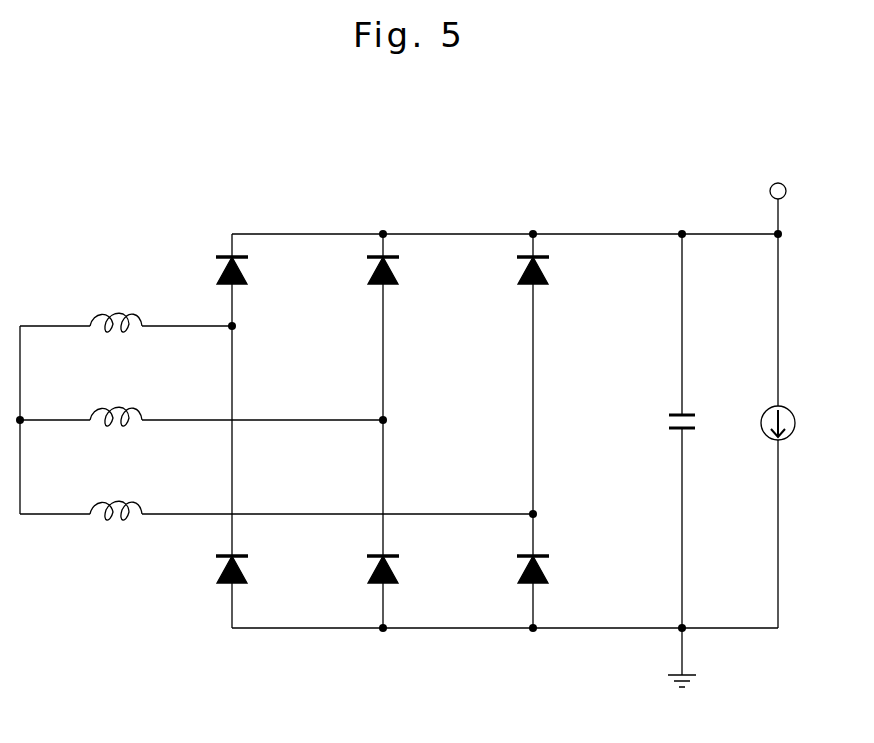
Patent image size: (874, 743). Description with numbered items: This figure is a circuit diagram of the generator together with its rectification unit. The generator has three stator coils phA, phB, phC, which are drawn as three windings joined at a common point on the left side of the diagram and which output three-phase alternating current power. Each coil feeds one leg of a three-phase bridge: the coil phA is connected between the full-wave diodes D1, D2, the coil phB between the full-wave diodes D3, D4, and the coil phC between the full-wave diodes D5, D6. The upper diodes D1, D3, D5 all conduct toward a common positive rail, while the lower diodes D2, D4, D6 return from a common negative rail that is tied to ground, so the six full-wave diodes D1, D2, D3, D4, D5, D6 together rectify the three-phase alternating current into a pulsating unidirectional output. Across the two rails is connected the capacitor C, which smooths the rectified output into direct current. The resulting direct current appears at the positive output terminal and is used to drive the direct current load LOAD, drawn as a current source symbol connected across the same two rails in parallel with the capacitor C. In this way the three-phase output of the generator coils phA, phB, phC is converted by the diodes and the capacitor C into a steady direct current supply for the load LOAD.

The full-wave diode D1 is at (247, 273).
The full-wave diode D2 is at (247, 572).
The full-wave diode D3 is at (399, 273).
The full-wave diode D4 is at (399, 572).
The full-wave diode D5 is at (549, 273).
The full-wave diode D6 is at (549, 572).
The capacitor C is at (689, 431).
The direct current load LOAD is at (801, 431).
The three-phase stator coil phA is at (116, 340).
The three-phase stator coil phB is at (116, 434).
The three-phase stator coil phC is at (116, 529).